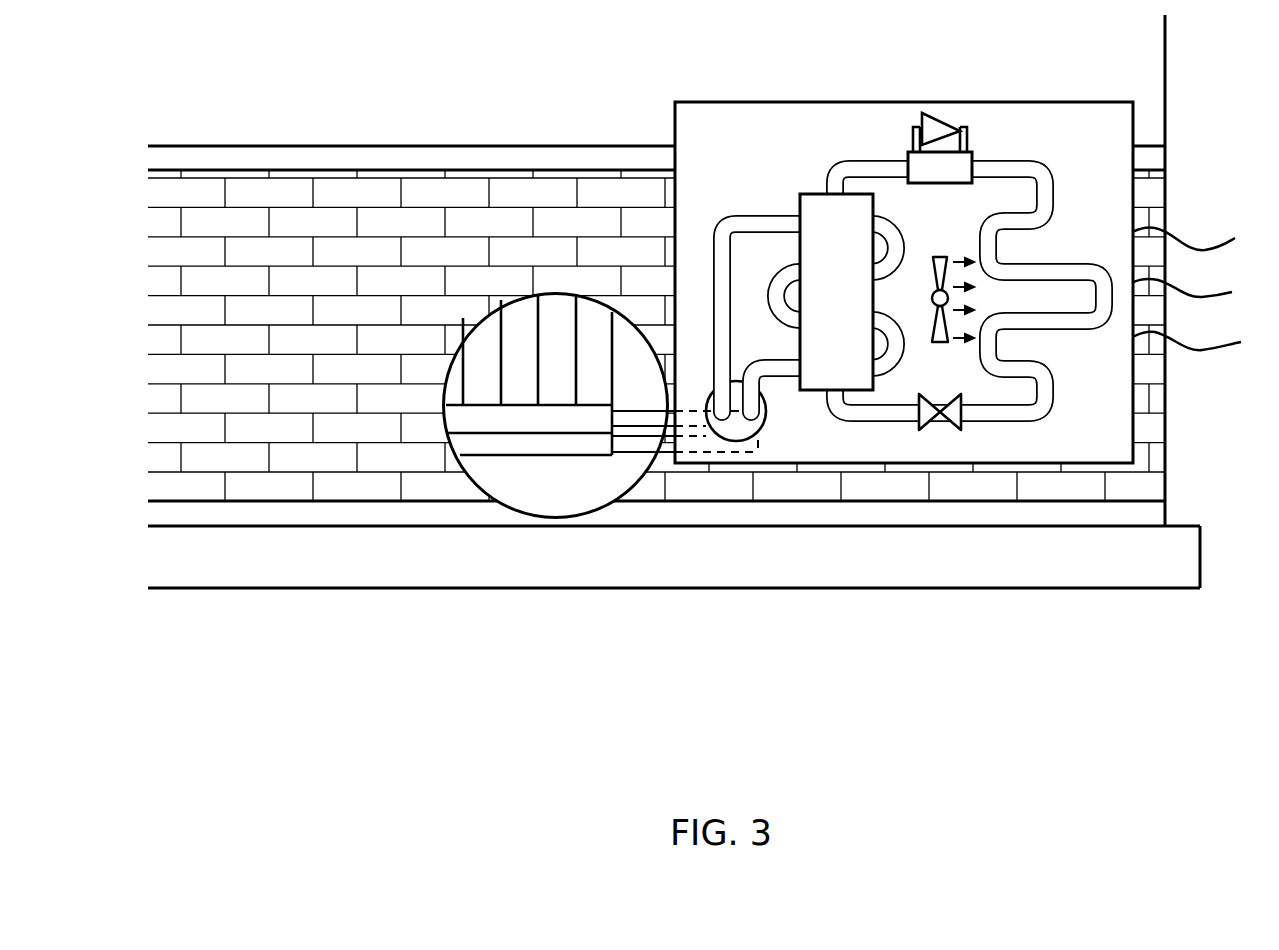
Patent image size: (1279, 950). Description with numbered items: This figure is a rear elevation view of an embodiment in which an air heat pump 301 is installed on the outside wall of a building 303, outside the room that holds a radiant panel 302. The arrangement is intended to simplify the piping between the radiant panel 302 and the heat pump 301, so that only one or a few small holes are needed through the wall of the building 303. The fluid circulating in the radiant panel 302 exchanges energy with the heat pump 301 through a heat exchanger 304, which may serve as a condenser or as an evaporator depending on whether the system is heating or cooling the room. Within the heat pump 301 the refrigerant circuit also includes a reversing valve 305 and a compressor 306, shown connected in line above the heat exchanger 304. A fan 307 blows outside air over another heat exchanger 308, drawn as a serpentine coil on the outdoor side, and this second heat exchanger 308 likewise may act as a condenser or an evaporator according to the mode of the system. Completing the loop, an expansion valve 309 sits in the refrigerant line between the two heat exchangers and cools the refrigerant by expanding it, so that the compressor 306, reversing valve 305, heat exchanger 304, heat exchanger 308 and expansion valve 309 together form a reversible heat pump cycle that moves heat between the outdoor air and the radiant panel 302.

The heat pump 301 is at (822, 134).
The radiant panel 302 is at (562, 382).
The building 303 is at (762, 412).
The heat exchanger 304 is at (810, 205).
The reversing valve 305 is at (962, 162).
The compressor 306 is at (943, 113).
The fan 307 is at (943, 253).
The heat exchanger 308 is at (1073, 330).
The expansion valve 309 is at (952, 423).